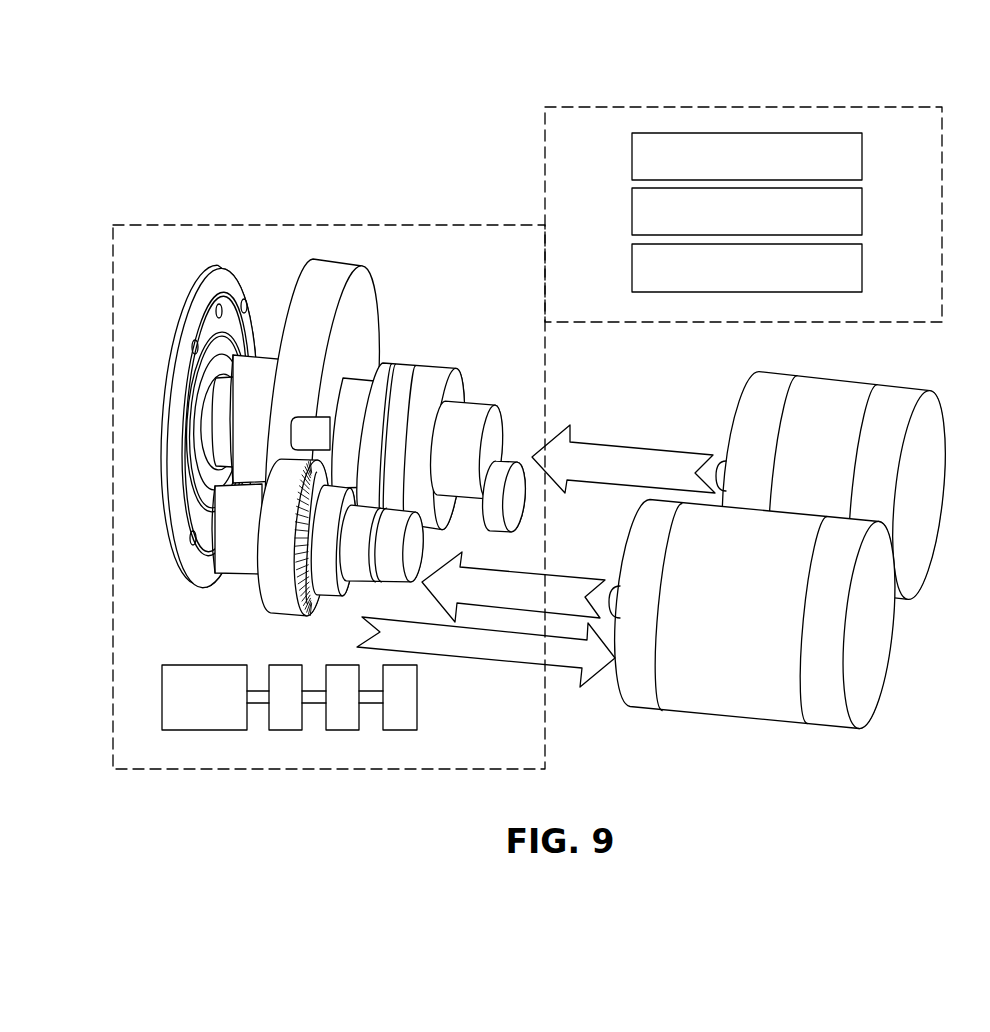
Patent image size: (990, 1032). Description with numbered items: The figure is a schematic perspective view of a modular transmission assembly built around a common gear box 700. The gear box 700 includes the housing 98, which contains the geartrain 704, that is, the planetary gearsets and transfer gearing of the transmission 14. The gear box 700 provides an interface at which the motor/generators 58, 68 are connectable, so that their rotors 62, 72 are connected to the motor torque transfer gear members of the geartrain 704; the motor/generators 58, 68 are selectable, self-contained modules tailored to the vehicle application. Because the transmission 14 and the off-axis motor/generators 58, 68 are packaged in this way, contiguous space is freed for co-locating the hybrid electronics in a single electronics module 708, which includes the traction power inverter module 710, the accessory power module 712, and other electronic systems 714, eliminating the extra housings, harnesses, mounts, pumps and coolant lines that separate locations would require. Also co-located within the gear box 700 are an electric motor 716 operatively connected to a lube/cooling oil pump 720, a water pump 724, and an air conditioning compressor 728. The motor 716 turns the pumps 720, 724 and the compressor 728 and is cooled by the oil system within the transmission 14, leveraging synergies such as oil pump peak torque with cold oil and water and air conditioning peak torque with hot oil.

The transmission 14 is at (283, 238).
The motor/generator 58 is at (827, 464).
The rotor 62 is at (722, 463).
The motor/generator 68 is at (769, 615).
The rotor 72 is at (617, 587).
The housing 98 is at (207, 224).
The gear box 700 is at (112, 437).
The geartrain 704 is at (381, 250).
The electronics module 708 is at (745, 107).
The traction power inverter module 710 is at (862, 157).
The accessory power module 712 is at (862, 211).
The other electronic systems 714 is at (862, 267).
The electric motor 716 is at (205, 731).
The lube/cooling oil pump 720 is at (287, 731).
The water pump 724 is at (340, 731).
The air conditioning compressor 728 is at (398, 731).